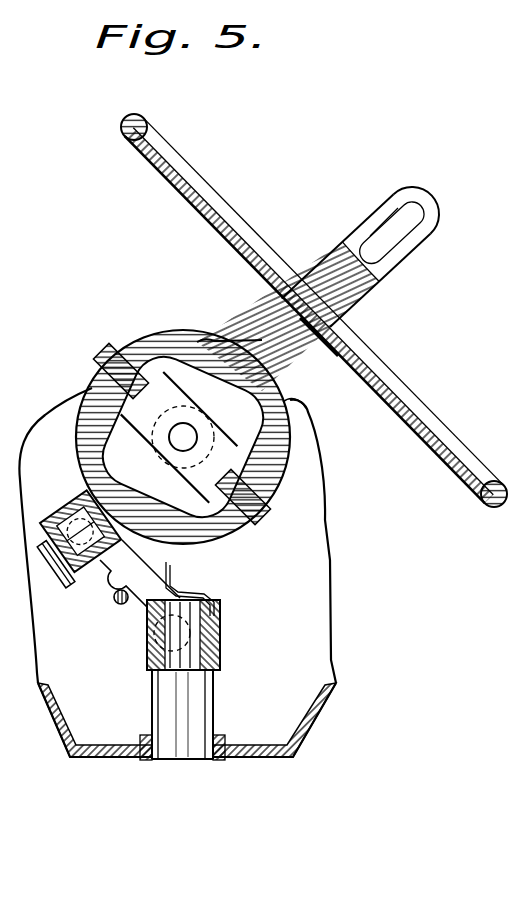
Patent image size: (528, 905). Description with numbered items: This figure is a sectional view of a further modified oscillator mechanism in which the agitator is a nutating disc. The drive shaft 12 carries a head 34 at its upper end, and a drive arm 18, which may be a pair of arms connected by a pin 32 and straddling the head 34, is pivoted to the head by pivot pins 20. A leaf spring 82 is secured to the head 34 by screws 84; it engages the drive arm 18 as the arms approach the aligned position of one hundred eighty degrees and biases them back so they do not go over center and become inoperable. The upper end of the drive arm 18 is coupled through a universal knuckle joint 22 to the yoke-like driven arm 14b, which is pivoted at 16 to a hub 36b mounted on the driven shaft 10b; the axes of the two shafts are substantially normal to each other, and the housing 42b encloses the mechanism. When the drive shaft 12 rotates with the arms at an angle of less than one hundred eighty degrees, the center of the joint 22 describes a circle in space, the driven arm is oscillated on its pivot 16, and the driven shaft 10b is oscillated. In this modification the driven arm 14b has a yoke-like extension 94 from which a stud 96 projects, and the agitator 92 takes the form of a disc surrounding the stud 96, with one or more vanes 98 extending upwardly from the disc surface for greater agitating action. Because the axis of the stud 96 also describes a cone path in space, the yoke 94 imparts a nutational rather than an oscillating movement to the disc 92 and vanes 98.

The agitator 92 is at (193, 172).
The yoke-like extension 94 is at (197, 341).
The vanes 98 is at (422, 211).
The stud 96 is at (338, 352).
The driven arm 14b is at (250, 549).
The driven shaft 10b is at (178, 445).
The pivot 16 is at (262, 520).
The housing 42b is at (373, 706).
The hub 36b is at (331, 399).
The drive shaft 12 is at (207, 703).
The screws 84 is at (222, 655).
The head 34 is at (148, 660).
The pivot pins 20 is at (222, 614).
The leaf spring 82 is at (176, 588).
The drive arm 18 is at (128, 632).
The pin 32 is at (114, 600).
The universal knuckle joint 22 is at (43, 520).